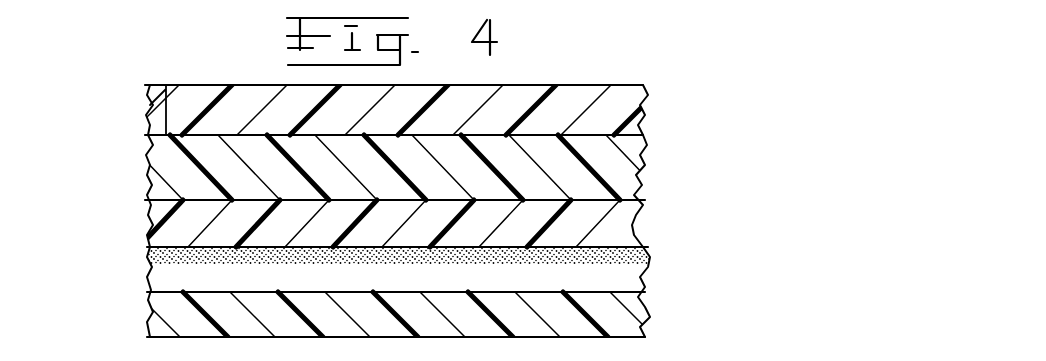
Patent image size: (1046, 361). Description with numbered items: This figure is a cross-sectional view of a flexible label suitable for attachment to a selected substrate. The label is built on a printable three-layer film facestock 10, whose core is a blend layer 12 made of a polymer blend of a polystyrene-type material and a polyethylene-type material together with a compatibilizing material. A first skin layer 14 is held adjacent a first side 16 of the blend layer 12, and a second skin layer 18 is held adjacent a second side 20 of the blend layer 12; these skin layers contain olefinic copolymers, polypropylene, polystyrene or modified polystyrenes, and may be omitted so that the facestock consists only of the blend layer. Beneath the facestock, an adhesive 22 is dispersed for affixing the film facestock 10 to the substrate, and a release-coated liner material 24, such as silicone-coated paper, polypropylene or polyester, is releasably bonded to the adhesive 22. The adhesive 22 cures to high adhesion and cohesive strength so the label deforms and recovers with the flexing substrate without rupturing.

The film facestock 10 is at (388, 197).
The blend layer 12 is at (612, 168).
The first skin layer 14 is at (628, 102).
The first side 16 is at (168, 88).
The second skin layer 18 is at (625, 213).
The second side 20 is at (152, 216).
The adhesive 22 is at (632, 277).
The release-coated liner material 24 is at (625, 322).